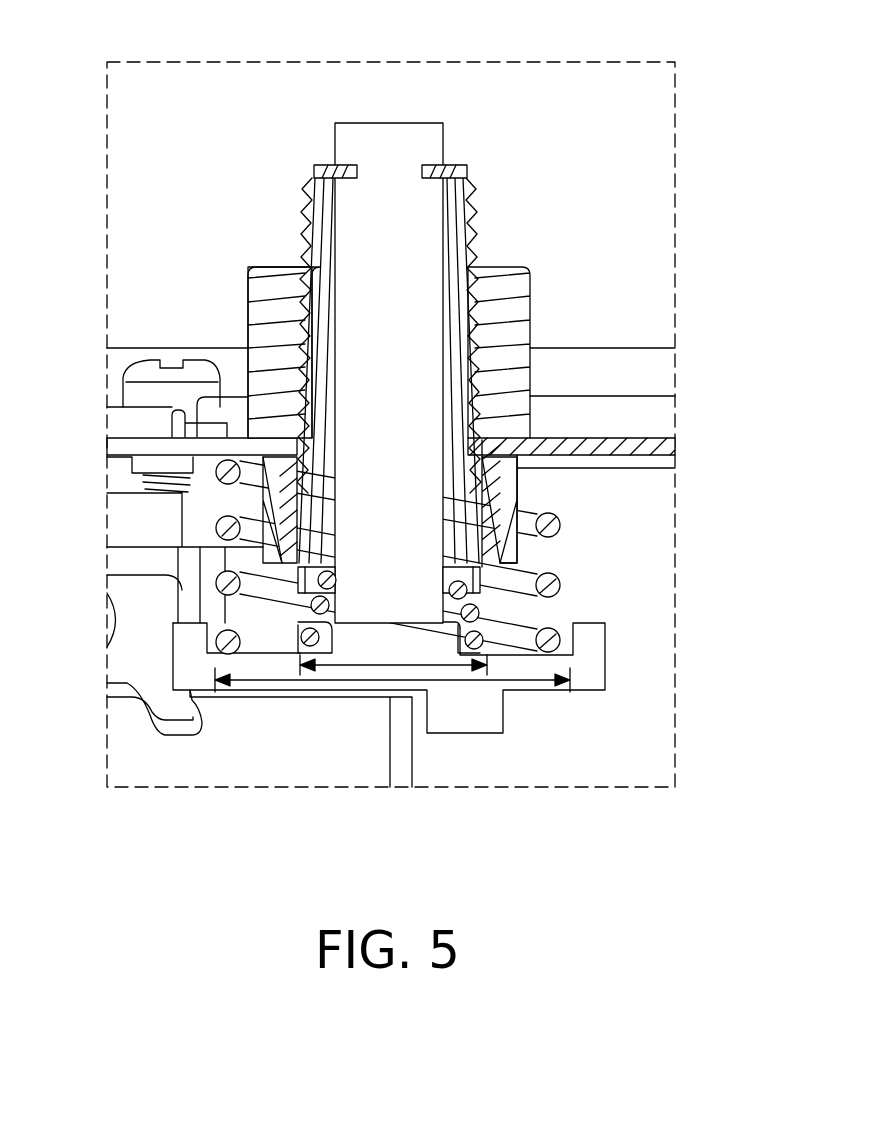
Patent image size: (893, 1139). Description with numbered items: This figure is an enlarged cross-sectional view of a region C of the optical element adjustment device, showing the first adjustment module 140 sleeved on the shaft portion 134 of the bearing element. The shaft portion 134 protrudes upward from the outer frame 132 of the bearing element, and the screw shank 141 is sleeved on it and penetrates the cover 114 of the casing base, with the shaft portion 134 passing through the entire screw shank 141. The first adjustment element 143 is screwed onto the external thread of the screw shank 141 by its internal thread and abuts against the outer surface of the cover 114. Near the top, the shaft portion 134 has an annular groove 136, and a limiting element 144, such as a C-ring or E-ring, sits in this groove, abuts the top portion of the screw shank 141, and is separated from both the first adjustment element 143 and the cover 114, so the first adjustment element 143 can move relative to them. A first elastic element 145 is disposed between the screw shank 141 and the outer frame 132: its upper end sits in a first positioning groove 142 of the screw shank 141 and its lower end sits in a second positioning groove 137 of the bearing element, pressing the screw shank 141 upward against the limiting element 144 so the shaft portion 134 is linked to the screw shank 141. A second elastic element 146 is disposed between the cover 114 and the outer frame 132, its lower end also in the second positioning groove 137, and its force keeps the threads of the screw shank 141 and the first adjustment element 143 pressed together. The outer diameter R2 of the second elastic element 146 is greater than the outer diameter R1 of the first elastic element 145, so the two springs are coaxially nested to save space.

The region C is at (140, 62).
The cover 114 is at (662, 447).
The outer frame 132 is at (598, 657).
The shaft portion 134 is at (411, 133).
The annular groove 136 is at (343, 165).
The second positioning groove 137 is at (208, 620).
The first adjustment module 140 is at (528, 133).
The screw shank 141 is at (472, 213).
The first positioning groove 142 is at (313, 575).
The first adjustment element 143 is at (508, 318).
The limiting element 144 is at (461, 172).
The first elastic element 145 is at (470, 650).
The second elastic element 146 is at (553, 530).
The outer diameter of the first elastic element R1 is at (360, 682).
The outer diameter of the second elastic element R2 is at (462, 682).